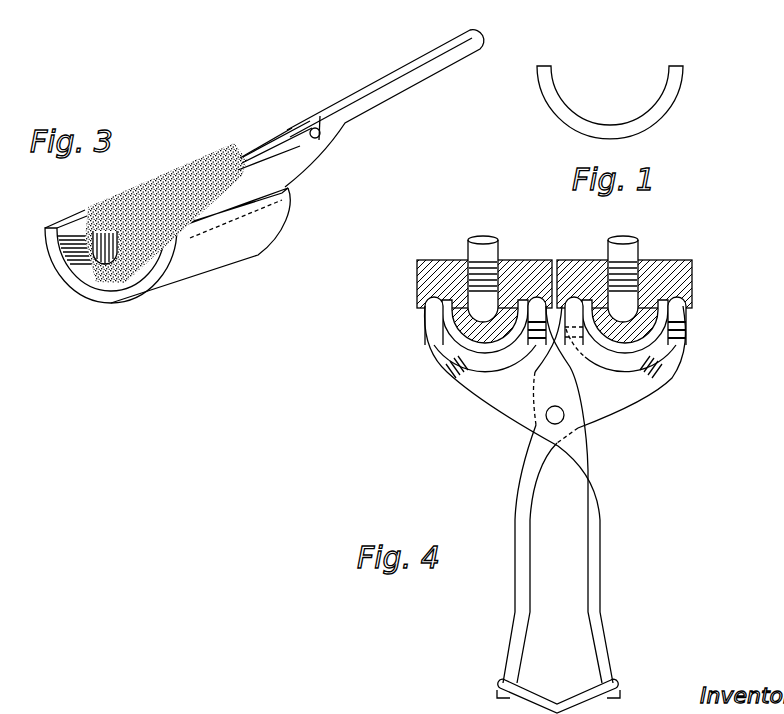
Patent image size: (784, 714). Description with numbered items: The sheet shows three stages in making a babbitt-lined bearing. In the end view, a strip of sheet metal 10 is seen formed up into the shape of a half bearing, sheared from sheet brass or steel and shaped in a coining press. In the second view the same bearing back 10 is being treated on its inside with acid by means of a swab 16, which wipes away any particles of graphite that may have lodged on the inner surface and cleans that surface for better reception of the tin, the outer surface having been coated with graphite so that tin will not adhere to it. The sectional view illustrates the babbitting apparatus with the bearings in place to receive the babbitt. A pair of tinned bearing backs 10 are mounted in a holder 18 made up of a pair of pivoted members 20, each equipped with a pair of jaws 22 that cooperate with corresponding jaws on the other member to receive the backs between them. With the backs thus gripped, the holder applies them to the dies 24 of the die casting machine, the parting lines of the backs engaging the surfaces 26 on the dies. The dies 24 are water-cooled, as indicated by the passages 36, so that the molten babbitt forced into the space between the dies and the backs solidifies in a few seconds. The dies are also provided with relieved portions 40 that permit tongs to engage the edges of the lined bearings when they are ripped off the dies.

In FIG. 3, the bearing back 10 is at (222, 258).
In FIG. 1, the bearing back 10 is at (666, 104).
In FIG. 4, the bearing back 10 is at (458, 338).
In FIG. 3, the swab 16 is at (193, 157).
In FIG. 4, the holder 18 is at (515, 612).
In FIG. 4, the pivoted members 20 is at (495, 398).
In FIG. 4, the jaws 22 is at (428, 310).
In FIG. 4, the dies 24 is at (470, 298).
In FIG. 4, the surfaces 26 is at (445, 310).
In FIG. 4, the passages 36 is at (488, 238).
In FIG. 4, the relieved portions 40 is at (567, 295).